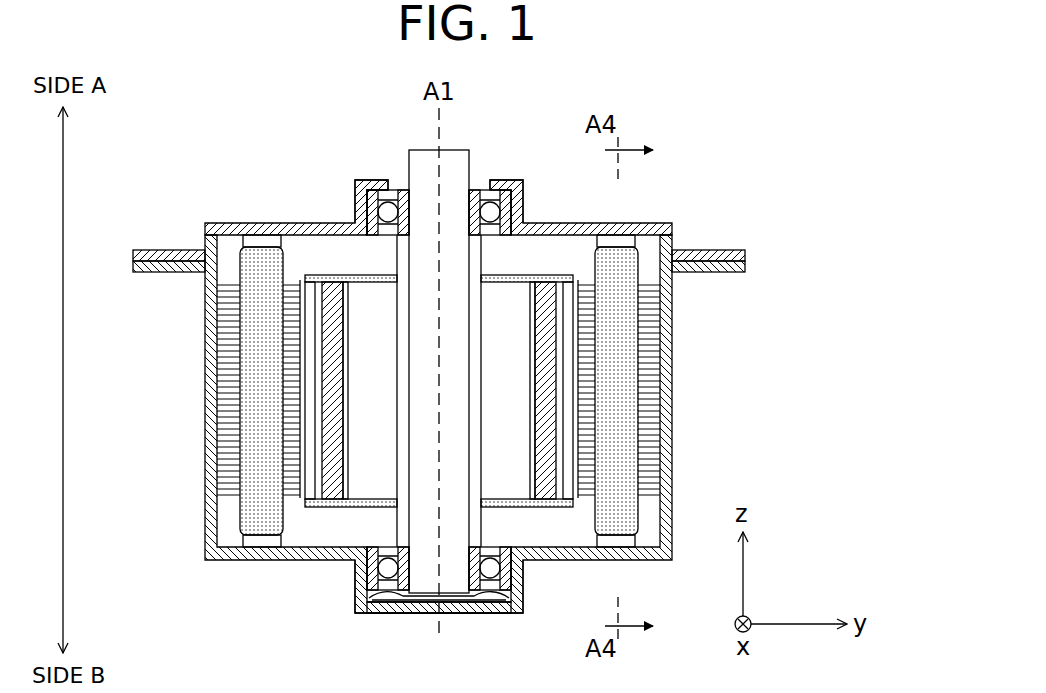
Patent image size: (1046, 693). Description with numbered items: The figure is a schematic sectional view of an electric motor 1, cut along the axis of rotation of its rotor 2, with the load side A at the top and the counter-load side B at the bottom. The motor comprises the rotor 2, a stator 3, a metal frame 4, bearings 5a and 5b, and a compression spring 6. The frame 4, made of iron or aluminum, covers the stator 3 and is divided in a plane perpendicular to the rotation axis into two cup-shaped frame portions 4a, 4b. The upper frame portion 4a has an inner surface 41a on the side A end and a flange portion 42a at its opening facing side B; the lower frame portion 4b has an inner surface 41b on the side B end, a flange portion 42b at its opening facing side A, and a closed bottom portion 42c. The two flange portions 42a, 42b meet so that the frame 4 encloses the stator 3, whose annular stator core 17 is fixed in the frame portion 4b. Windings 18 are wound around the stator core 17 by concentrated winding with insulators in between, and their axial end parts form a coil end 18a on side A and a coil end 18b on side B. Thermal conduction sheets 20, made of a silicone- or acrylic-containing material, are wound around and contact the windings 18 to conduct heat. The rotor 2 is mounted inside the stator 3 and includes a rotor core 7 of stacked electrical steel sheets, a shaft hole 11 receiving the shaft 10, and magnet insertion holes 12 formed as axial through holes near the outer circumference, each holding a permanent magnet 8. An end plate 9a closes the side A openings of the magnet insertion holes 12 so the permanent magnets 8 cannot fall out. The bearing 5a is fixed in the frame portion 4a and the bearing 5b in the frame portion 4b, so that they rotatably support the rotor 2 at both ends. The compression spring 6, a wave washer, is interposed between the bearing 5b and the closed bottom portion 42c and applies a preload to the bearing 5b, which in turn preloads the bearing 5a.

The electric motor 1 is at (165, 160).
The rotor 2 is at (130, 280).
The stator 3 is at (775, 340).
The frame 4 is at (849, 205).
The frame portion 4a is at (675, 232).
The frame portion 4b is at (675, 305).
The bearing 5a is at (488, 210).
The bearing 5b is at (490, 570).
The compression spring 6 is at (389, 600).
The rotor core 7 is at (314, 393).
The permanent magnet 8 is at (336, 427).
The end plate 9a is at (305, 278).
The shaft 10 is at (413, 463).
The shaft hole 11 is at (398, 368).
The magnet insertion hole 12 is at (322, 320).
The stator core 17 is at (652, 412).
The winding 18 is at (618, 380).
The coil end 18a is at (614, 264).
The coil end 18b is at (613, 524).
The thermal conduction sheet 20 is at (261, 243).
The inner surface 41a is at (316, 241).
The inner surface 41b is at (312, 544).
The flange portion 42a is at (744, 253).
The flange portion 42b is at (744, 267).
The closed bottom portion 42c is at (455, 609).